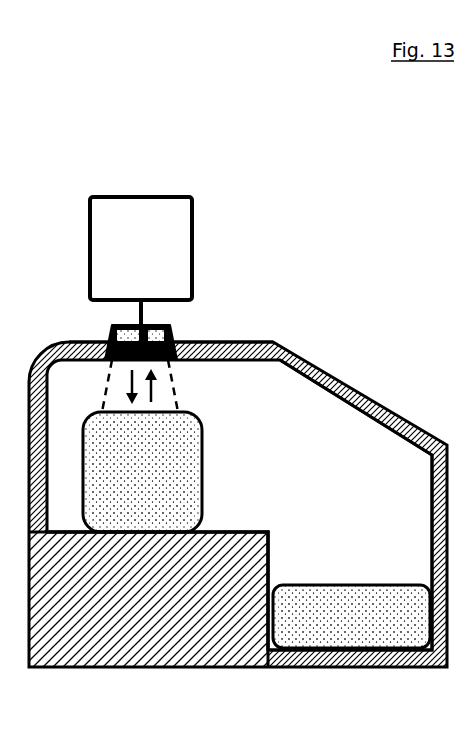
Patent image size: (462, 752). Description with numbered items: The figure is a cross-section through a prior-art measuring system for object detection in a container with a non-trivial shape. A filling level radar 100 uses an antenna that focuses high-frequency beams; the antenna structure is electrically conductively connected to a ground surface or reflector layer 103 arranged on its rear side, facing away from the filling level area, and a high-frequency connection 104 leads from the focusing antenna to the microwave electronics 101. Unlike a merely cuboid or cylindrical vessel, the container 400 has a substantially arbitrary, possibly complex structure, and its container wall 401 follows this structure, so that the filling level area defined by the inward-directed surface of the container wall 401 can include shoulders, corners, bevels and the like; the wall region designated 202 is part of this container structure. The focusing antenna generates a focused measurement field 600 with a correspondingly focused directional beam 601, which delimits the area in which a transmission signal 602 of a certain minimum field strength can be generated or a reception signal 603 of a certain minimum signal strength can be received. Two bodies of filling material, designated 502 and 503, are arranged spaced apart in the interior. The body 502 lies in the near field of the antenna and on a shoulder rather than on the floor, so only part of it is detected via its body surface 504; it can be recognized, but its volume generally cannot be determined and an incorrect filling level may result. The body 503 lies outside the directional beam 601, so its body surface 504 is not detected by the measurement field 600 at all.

The filling level radar 100 is at (274, 262).
The microwave electronics 101 is at (194, 204).
The reflector layer 103 is at (174, 333).
The high-frequency connection 104 is at (139, 308).
The housing top wall 202 is at (208, 343).
The container 400 is at (378, 395).
The container wall 401 is at (355, 410).
The body 502 is at (195, 485).
The body 503 is at (325, 584).
The body surface 504 is at (130, 418).
The measurement field 600 is at (126, 376).
The directional beam 601 is at (181, 384).
The transmission signal 602 is at (105, 397).
The reception signal 603 is at (155, 392).